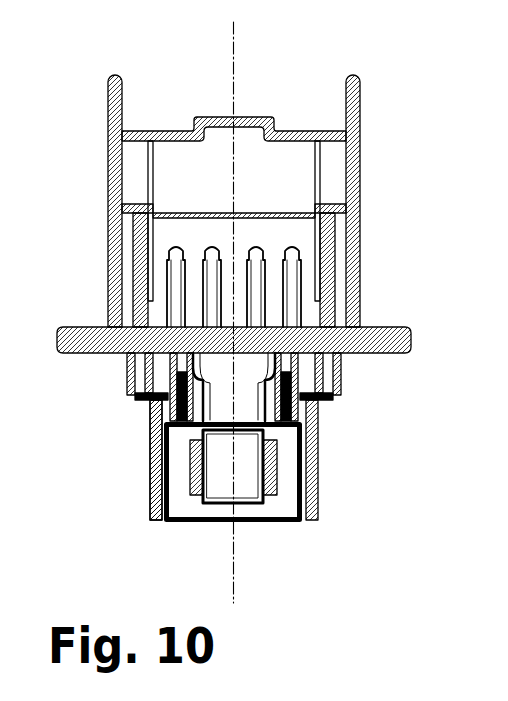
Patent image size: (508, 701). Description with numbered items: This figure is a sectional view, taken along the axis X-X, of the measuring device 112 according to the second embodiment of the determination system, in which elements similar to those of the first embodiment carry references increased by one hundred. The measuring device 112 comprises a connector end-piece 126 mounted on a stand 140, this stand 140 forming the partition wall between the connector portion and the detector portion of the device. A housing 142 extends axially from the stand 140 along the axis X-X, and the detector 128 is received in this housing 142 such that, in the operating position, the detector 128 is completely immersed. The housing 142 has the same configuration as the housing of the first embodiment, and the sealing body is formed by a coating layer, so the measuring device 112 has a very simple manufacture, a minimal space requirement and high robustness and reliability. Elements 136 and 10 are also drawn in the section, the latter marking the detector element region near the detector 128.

The sensor element 10 is at (241, 493).
The measuring device 112 is at (362, 90).
The connector end-piece 126 is at (108, 90).
The detector 128 is at (255, 522).
The contact pins 136 is at (302, 287).
The stand 140 is at (368, 363).
The housing 142 is at (152, 410).
The axis X- X is at (236, 91).